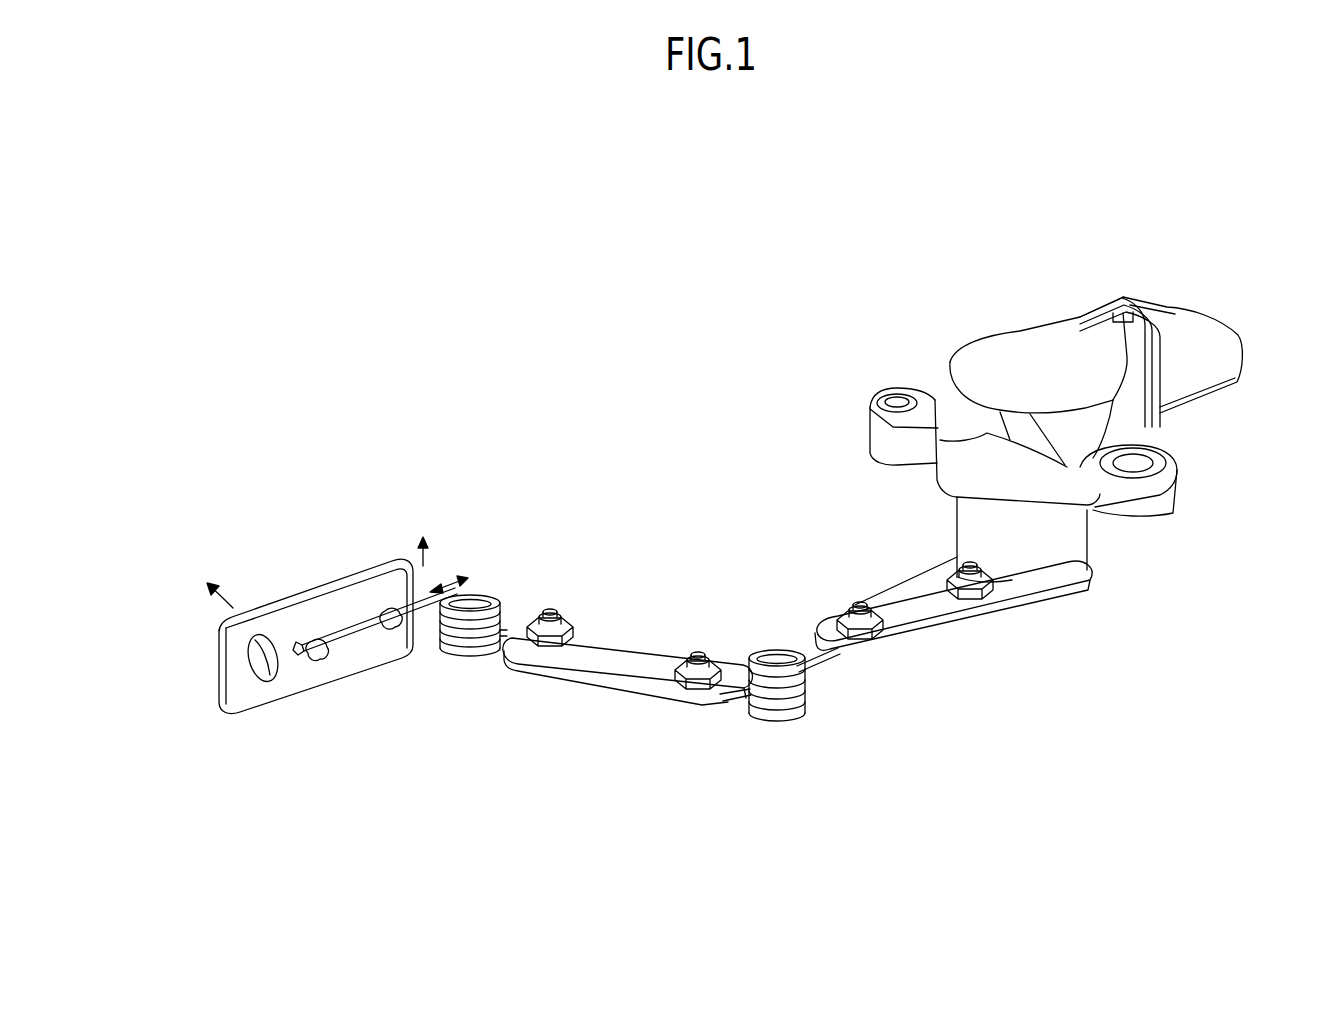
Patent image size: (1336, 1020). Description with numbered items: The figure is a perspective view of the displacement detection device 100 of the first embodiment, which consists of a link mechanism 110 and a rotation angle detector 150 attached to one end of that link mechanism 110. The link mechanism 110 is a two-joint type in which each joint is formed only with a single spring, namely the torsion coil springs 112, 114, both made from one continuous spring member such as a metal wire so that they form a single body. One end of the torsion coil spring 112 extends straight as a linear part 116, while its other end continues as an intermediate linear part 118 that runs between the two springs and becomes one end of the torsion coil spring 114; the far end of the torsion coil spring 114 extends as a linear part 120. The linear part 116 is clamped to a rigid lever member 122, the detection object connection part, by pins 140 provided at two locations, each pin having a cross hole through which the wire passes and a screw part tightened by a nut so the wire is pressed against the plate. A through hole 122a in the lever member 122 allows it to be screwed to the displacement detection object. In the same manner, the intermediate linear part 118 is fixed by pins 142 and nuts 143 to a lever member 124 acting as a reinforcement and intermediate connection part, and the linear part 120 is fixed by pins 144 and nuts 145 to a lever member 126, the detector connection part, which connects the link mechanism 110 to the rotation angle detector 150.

The displacement detection device 100 is at (525, 172).
The link mechanism 110 is at (673, 472).
The torsion coil spring 112 is at (469, 652).
The torsion coil spring 114 is at (802, 711).
The linear part 116 is at (357, 632).
The intermediate linear part 118 is at (732, 705).
The linear part 120 is at (836, 664).
The lever member 122 is at (344, 574).
The through hole 122a is at (264, 648).
The lever member 124 is at (615, 680).
The lever member 126 is at (955, 620).
The pin 140 is at (316, 662).
The pin 142 is at (697, 654).
The nut 143 is at (716, 664).
The pin 144 is at (960, 563).
The nut 145 is at (945, 574).
The rotation angle detector 150 is at (990, 331).